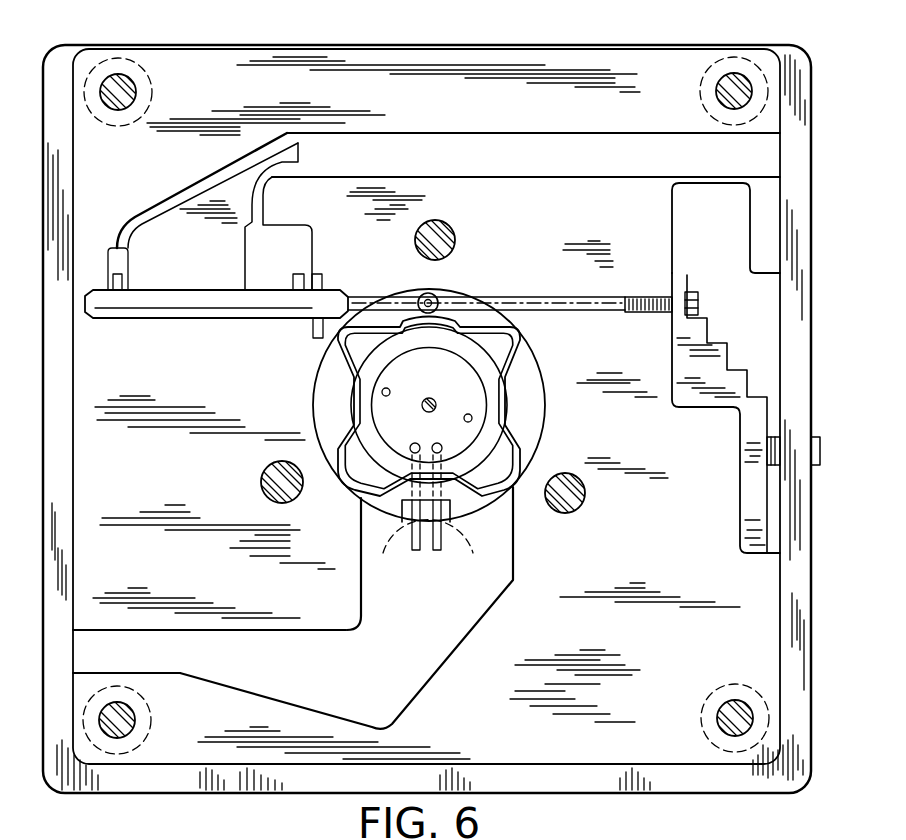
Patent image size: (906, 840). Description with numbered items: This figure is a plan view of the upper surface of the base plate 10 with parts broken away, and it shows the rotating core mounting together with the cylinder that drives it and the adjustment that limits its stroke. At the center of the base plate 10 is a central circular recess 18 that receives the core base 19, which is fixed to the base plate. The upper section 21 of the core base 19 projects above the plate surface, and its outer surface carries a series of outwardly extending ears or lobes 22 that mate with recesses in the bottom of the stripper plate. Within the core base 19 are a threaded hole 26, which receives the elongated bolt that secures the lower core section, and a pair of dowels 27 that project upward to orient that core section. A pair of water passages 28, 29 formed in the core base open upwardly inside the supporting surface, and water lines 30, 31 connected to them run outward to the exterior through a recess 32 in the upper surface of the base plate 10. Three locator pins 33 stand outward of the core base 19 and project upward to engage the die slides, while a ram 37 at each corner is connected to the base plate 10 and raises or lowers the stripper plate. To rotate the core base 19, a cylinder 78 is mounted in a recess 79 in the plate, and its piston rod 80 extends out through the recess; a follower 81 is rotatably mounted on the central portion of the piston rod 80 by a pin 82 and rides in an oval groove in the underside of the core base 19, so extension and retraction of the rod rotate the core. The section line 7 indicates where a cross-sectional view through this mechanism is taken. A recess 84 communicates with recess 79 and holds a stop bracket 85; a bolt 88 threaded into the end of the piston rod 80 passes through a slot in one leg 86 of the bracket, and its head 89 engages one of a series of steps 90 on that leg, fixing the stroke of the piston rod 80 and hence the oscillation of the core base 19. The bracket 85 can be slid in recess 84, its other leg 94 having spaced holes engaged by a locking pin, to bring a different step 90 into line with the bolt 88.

The base plate 10 is at (760, 633).
The piston rod or ram 37 is at (118, 78).
The locator pins 33 is at (447, 224).
The section line 7 is at (332, 282).
The cylinder 78 is at (170, 312).
The recess 79 is at (212, 288).
The piston rod 80 is at (373, 297).
The follower 81 is at (440, 296).
The pin 82 is at (424, 296).
The central circular recess 18 is at (313, 373).
The core base 19 is at (330, 398).
The upper section 21 is at (506, 418).
The ears or lobes 22 is at (520, 362).
The hole 26 is at (429, 397).
The dowels 27 is at (388, 396).
The water passage 28 is at (401, 516).
The water passage 29 is at (470, 516).
The water line 30 is at (416, 551).
The water line 31 is at (441, 551).
The recess 32 is at (420, 681).
The recess 84 is at (676, 213).
The stop bracket 85 is at (683, 403).
The leg 86 is at (680, 330).
The bolt 88 is at (648, 296).
The head 89 is at (700, 290).
The steps 90 is at (756, 380).
The leg 94 is at (748, 490).